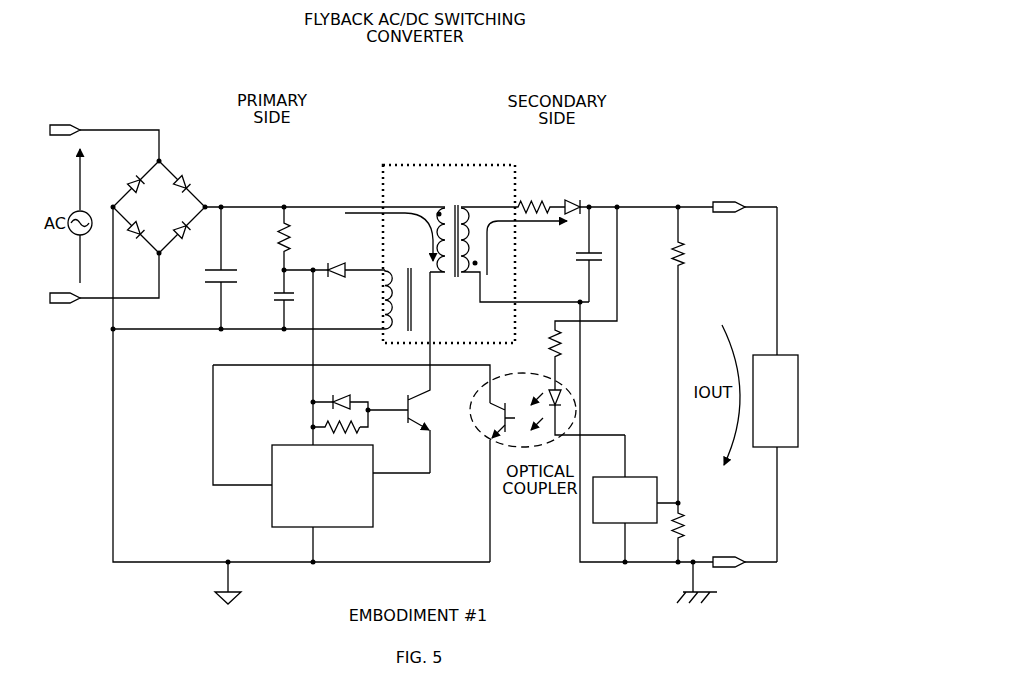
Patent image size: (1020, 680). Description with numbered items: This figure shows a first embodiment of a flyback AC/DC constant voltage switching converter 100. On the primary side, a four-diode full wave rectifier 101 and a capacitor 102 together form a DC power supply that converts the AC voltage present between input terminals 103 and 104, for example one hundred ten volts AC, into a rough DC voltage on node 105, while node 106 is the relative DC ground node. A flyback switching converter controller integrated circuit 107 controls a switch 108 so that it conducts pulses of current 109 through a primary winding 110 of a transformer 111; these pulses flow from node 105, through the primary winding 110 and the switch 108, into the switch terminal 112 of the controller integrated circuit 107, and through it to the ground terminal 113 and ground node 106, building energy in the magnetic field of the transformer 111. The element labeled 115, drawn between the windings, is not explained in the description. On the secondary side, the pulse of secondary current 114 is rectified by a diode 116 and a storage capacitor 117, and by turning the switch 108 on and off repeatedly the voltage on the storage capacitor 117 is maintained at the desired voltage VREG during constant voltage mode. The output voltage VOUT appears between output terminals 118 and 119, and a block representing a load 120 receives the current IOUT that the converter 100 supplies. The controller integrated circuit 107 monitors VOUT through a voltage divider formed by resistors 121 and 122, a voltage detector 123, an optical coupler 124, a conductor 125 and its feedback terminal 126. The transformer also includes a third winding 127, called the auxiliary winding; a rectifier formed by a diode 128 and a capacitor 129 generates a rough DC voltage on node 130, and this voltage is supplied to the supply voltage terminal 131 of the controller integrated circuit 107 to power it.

The flyback AC/DC switching converter 100 is at (393, 80).
The full wave rectifier 101 is at (187, 161).
The capacitor 102 is at (212, 286).
The input terminal 103 is at (61, 123).
The input terminal 104 is at (61, 290).
The node 105 is at (252, 206).
The ground node 106 is at (250, 330).
The controller integrated circuit 107 is at (333, 501).
The switch 108 is at (433, 411).
The pulses of current 109 is at (395, 230).
The primary winding 110 is at (450, 277).
The transformer 111 is at (395, 165).
The switch terminal 112 is at (388, 473).
The ground terminal 113 is at (318, 531).
The secondary current 114 is at (540, 224).
The transformer core 115 is at (466, 204).
The diode 116 is at (571, 200).
The storage capacitor 117 is at (575, 257).
The output terminal 118 is at (731, 200).
The output terminal 119 is at (729, 569).
The load 120 is at (795, 354).
The resistor 121 is at (689, 253).
The resistor 122 is at (689, 516).
The voltage detector 123 is at (648, 477).
The optical coupler 124 is at (536, 372).
The conductor 125 is at (346, 366).
The feedback terminal 126 is at (266, 485).
The third winding 127 is at (384, 310).
The diode 128 is at (335, 262).
The capacitor 129 is at (274, 298).
The node 130 is at (282, 270).
The supply voltage terminal 131 is at (311, 443).